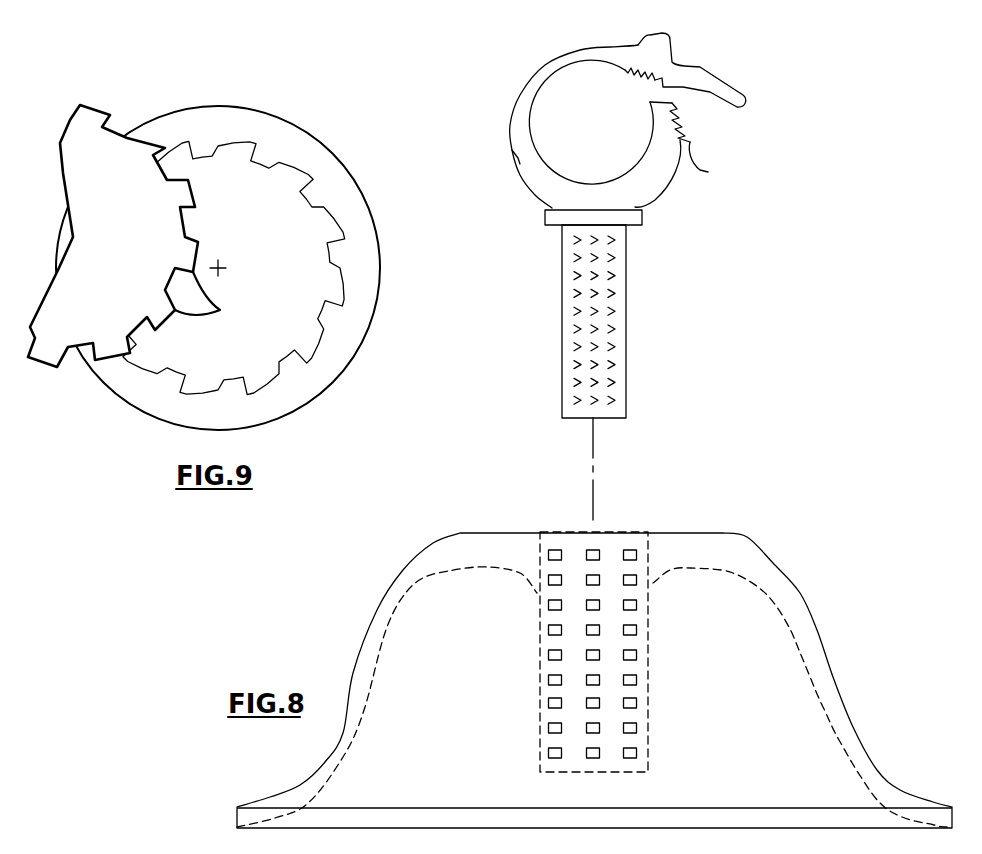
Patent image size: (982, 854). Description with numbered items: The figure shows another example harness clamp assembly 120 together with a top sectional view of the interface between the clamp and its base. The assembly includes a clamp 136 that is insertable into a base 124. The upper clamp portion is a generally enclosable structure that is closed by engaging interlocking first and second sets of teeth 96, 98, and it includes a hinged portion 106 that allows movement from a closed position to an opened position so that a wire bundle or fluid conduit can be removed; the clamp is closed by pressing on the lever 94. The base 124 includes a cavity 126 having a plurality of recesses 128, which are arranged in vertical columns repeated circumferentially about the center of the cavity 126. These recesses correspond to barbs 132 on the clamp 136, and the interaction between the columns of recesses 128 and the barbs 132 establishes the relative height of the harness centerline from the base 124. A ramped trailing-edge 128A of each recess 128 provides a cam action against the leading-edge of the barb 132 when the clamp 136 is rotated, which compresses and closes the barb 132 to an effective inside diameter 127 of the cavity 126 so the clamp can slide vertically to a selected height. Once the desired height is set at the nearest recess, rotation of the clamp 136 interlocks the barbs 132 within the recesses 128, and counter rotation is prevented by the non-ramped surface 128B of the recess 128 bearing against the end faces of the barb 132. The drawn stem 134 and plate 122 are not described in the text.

In FIG. 8, the lever 94 is at (724, 90).
In FIG. 8, the first set of teeth 96 is at (700, 170).
In FIG. 8, the second set of teeth 98 is at (625, 70).
In FIG. 8, the hinged portion 106 is at (515, 168).
In FIG. 8, the harness clamp assembly 120 is at (841, 235).
In FIG. 8, the clamp base plate 122 is at (645, 208).
In FIG. 8, the base 124 is at (748, 617).
In FIG. 8, the cavity 126 is at (640, 522).
In FIG. 9, the effective inside diameter 127 is at (338, 263).
In FIG. 8, the effective inside diameter 127 is at (580, 571).
In FIG. 9, the recesses 128 is at (303, 177).
In FIG. 8, the recesses 128 is at (560, 678).
In FIG. 9, the ramped trailing-edge 128A is at (294, 158).
In FIG. 9, the non-ramped surface 128B is at (326, 188).
In FIG. 9, the barbs 132 is at (221, 309).
In FIG. 8, the barbs 132 is at (587, 298).
In FIG. 8, the stem 134 is at (630, 340).
In FIG. 8, the clamp 136 is at (500, 390).